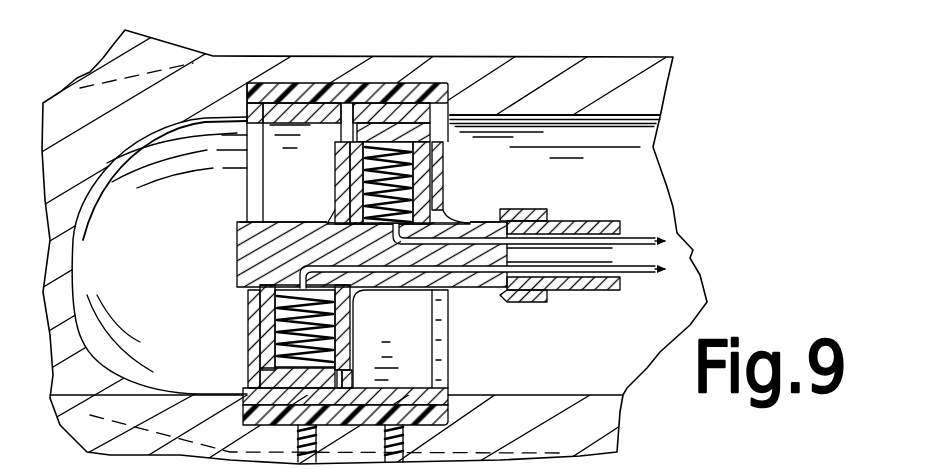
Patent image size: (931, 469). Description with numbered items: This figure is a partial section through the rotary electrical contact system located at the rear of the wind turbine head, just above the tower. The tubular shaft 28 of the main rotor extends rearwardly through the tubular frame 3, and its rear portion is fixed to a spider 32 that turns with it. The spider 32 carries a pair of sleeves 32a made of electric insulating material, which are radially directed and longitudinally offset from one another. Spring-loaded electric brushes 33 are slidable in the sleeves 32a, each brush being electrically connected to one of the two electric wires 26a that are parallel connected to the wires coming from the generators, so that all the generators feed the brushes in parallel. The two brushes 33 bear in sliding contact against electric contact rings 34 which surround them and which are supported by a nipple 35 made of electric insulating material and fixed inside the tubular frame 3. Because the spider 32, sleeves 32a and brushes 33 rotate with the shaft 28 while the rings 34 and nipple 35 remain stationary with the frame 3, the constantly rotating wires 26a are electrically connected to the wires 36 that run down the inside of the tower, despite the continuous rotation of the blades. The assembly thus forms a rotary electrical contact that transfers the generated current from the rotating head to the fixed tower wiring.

The tubular frame 3 is at (628, 95).
The electric wires 26a is at (666, 272).
The tubular shaft 28 is at (581, 221).
The spider 32 is at (237, 230).
The sleeves 32a is at (462, 188).
The spring-loaded electric brushes 33 is at (446, 183).
The electric contact rings 34 is at (362, 120).
The nipple 35 is at (248, 97).
The wires 36 is at (443, 456).